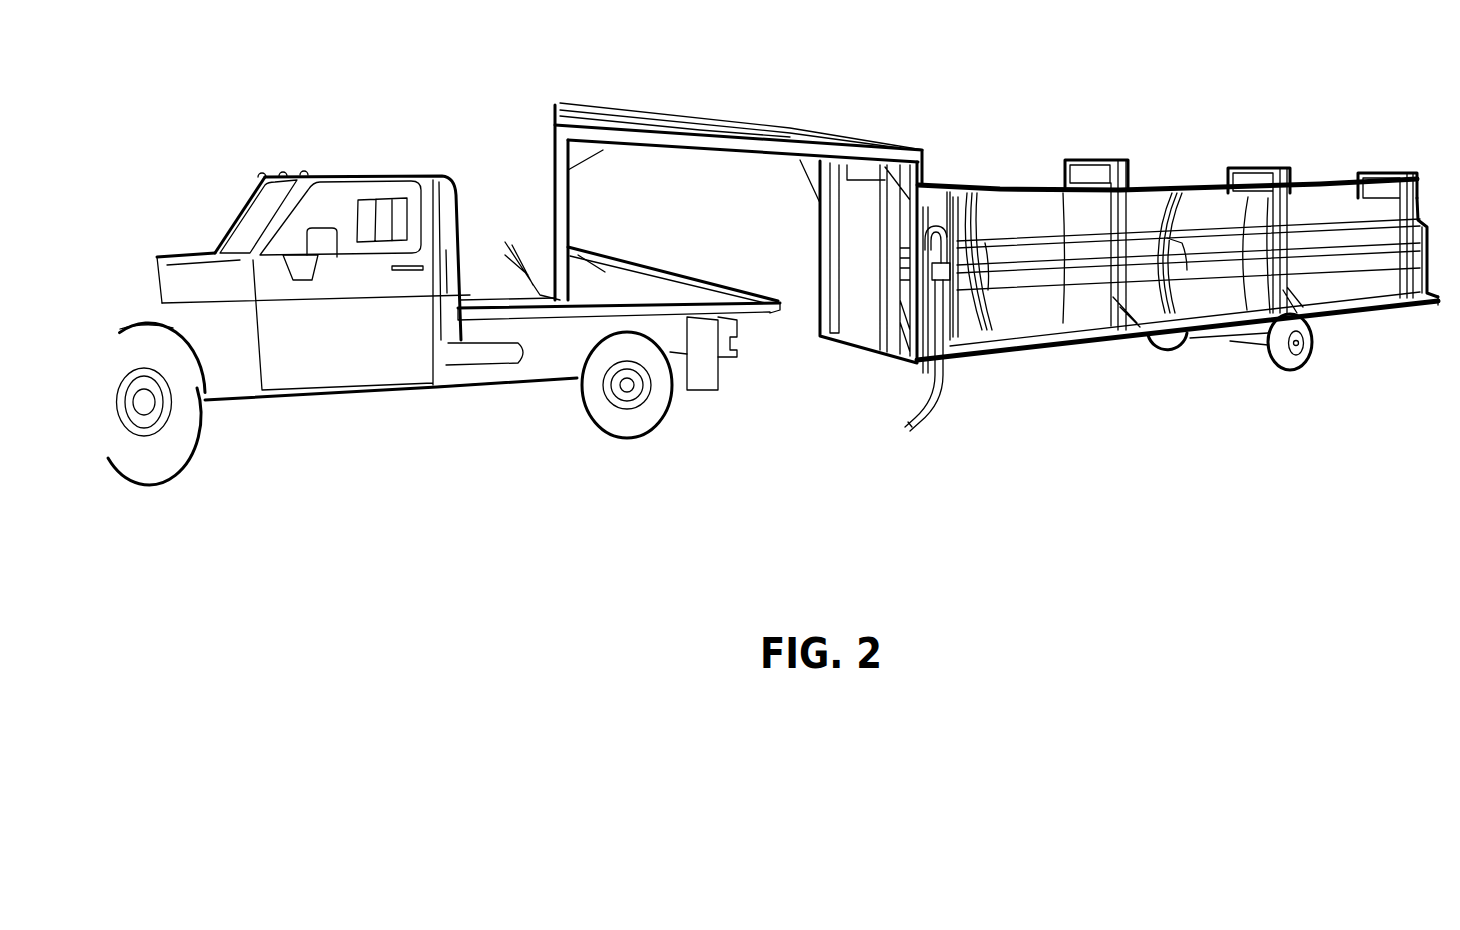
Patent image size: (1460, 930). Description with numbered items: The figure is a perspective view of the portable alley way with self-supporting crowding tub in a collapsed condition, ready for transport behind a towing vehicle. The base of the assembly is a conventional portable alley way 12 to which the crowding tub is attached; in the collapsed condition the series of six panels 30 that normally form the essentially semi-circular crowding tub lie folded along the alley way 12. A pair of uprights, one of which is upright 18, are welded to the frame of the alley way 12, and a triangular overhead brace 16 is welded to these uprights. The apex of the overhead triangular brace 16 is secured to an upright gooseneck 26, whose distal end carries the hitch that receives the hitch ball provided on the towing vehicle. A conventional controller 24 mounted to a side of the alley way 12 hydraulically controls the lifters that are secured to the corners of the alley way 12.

The portable alley way 12 is at (1095, 256).
The triangular overhead brace 16 is at (838, 150).
The upright 18 is at (822, 221).
The controller 24 is at (948, 285).
The upright gooseneck 26 is at (550, 193).
The panels 30 is at (1023, 312).